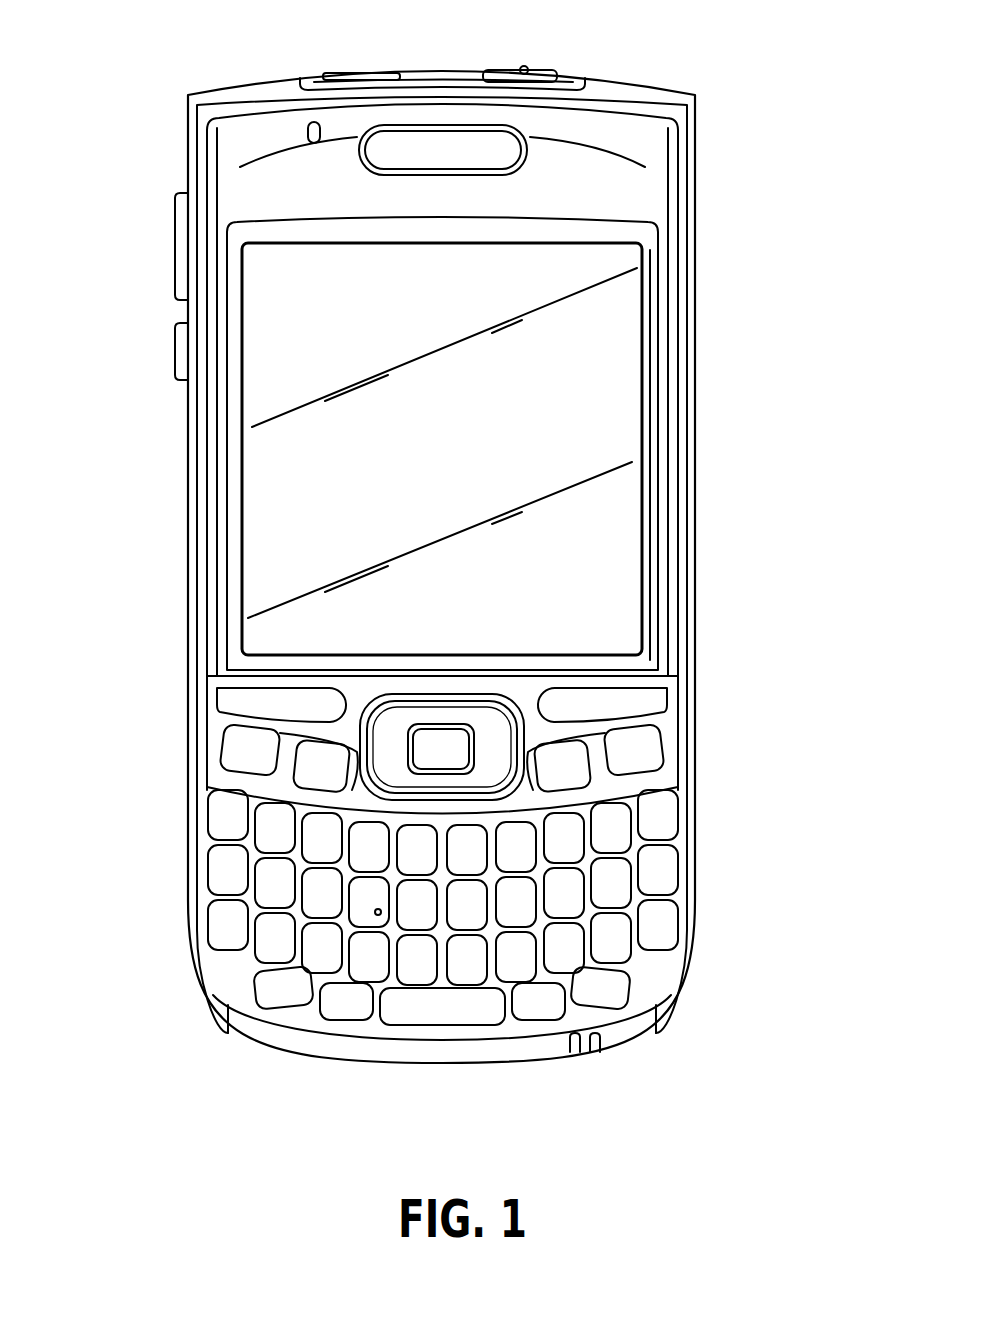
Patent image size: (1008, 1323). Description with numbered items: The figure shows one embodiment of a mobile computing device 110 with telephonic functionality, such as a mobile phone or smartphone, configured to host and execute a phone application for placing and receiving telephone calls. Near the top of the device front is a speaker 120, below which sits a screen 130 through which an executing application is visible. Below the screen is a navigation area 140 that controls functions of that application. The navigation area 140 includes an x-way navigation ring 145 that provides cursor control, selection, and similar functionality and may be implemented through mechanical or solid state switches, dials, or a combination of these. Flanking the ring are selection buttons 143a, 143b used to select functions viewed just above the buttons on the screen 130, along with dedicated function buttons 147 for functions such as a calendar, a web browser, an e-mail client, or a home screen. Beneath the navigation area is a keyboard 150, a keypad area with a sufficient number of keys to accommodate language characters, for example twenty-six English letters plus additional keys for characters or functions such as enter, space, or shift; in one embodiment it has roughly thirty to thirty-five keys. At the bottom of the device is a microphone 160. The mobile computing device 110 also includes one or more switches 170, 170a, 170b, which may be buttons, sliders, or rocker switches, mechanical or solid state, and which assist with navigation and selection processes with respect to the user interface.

The mobile computing device 110 is at (692, 90).
The speaker 120 is at (440, 143).
The screen 130 is at (602, 400).
The navigation area 140 is at (710, 677).
The selection button 143a is at (253, 700).
The selection button 143b is at (623, 702).
The navigation ring 145 is at (490, 720).
The dedicated function buttons 147 is at (318, 767).
The keyboard 150 is at (708, 802).
The microphone 160 is at (588, 1057).
The switch 170 is at (533, 67).
The switch 170a is at (175, 232).
The switch 170b is at (175, 352).